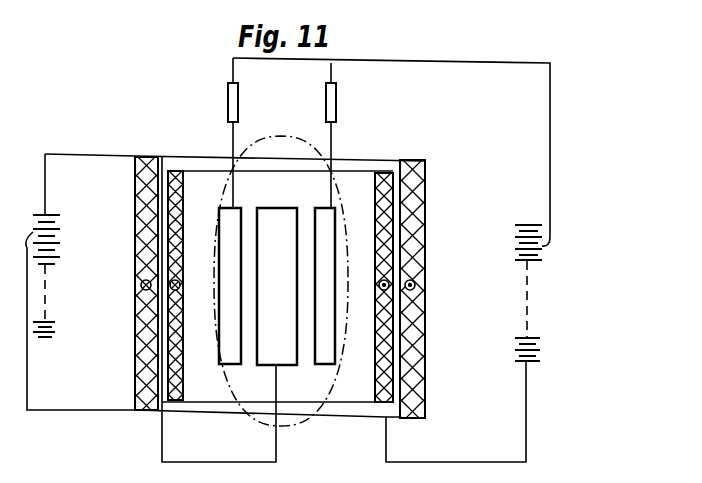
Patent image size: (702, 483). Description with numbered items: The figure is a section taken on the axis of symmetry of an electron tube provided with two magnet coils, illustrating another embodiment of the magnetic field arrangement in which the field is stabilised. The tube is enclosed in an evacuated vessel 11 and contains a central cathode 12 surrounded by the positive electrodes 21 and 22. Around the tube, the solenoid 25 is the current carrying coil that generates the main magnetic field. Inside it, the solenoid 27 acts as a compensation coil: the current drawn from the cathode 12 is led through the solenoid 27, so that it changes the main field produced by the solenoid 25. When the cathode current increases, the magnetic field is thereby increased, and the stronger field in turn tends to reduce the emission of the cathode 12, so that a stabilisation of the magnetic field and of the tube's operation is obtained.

The evacuated vessel 11 is at (270, 139).
The central cathode 12 is at (266, 208).
The positive electrode 21 is at (248, 208).
The positive electrode 22 is at (325, 208).
The solenoid 25 is at (134, 177).
The solenoid 27 is at (183, 201).